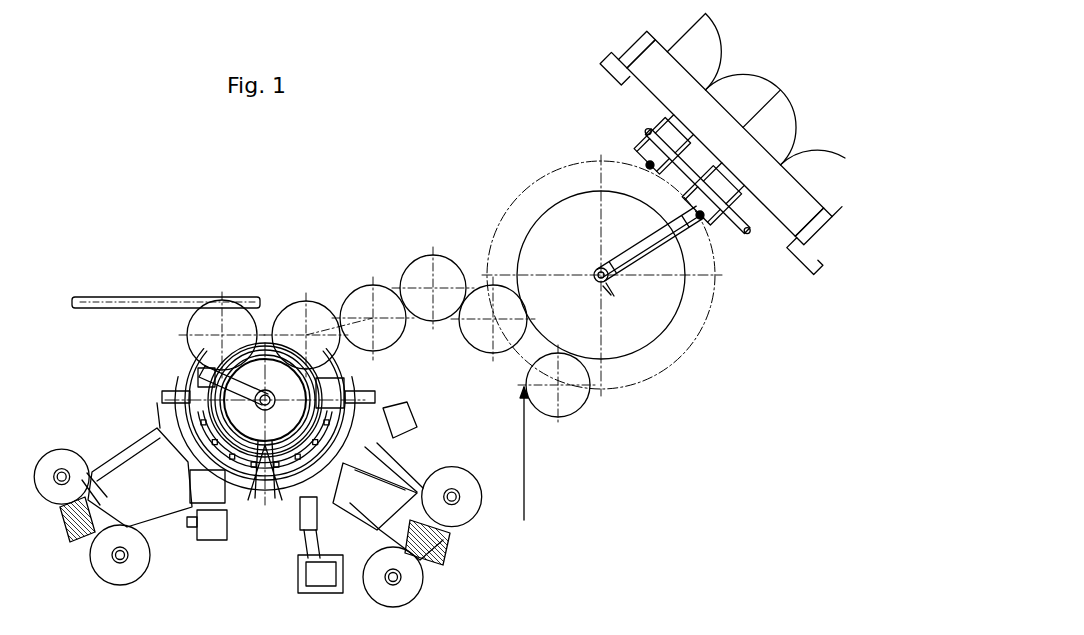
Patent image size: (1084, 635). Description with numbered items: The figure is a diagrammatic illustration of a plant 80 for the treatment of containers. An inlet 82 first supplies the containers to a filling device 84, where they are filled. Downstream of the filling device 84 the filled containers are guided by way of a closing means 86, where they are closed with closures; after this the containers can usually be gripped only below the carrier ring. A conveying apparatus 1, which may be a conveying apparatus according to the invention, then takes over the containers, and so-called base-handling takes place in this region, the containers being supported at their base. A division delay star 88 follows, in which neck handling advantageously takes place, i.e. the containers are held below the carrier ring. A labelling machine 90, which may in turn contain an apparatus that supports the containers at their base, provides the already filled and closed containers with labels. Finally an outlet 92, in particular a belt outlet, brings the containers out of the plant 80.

The conveying apparatus 1 is at (213, 320).
The plant 80 is at (619, 421).
The inlet 82 is at (524, 460).
The filling device 84 is at (565, 233).
The closing means 86 is at (442, 267).
The division delay star 88 is at (298, 317).
The labelling machine 90 is at (249, 412).
The outlet 92 is at (150, 302).